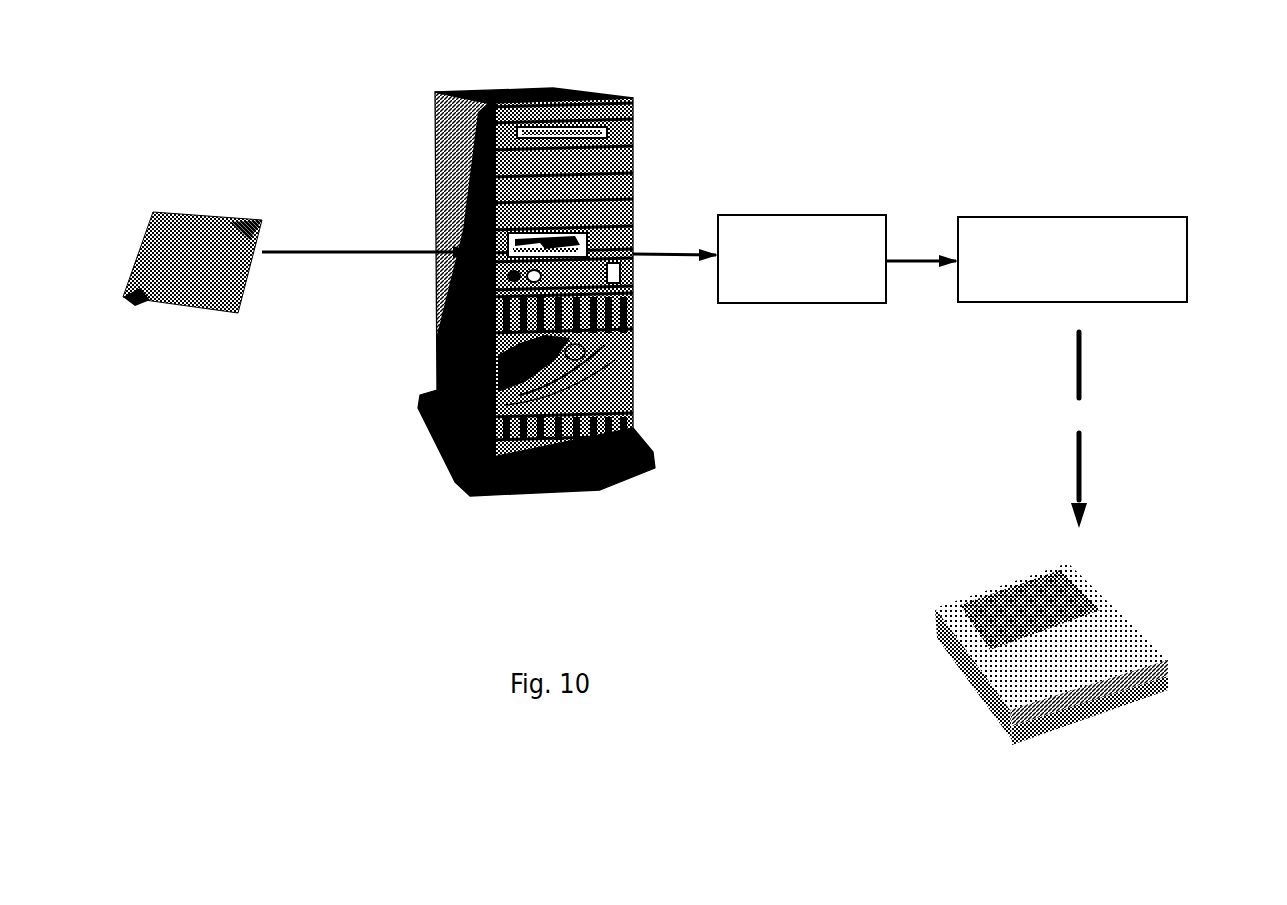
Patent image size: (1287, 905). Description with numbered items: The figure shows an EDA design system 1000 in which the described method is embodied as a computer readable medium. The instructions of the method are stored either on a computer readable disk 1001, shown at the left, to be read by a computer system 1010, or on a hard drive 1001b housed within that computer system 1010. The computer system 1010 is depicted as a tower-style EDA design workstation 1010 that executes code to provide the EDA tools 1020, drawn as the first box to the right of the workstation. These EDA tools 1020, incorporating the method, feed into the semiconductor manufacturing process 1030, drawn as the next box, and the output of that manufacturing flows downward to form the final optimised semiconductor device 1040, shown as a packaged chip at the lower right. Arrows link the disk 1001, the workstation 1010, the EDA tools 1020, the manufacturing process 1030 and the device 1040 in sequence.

The EDA design system 1000 is at (862, 550).
The computer readable disk 1001 is at (225, 218).
The hard drive 1001b is at (588, 443).
The computer system 1010 is at (623, 93).
The EDA tools 1020 is at (878, 222).
The semiconductor manufacturing process 1030 is at (1186, 230).
The final optimised semiconductor device 1040 is at (1130, 628).